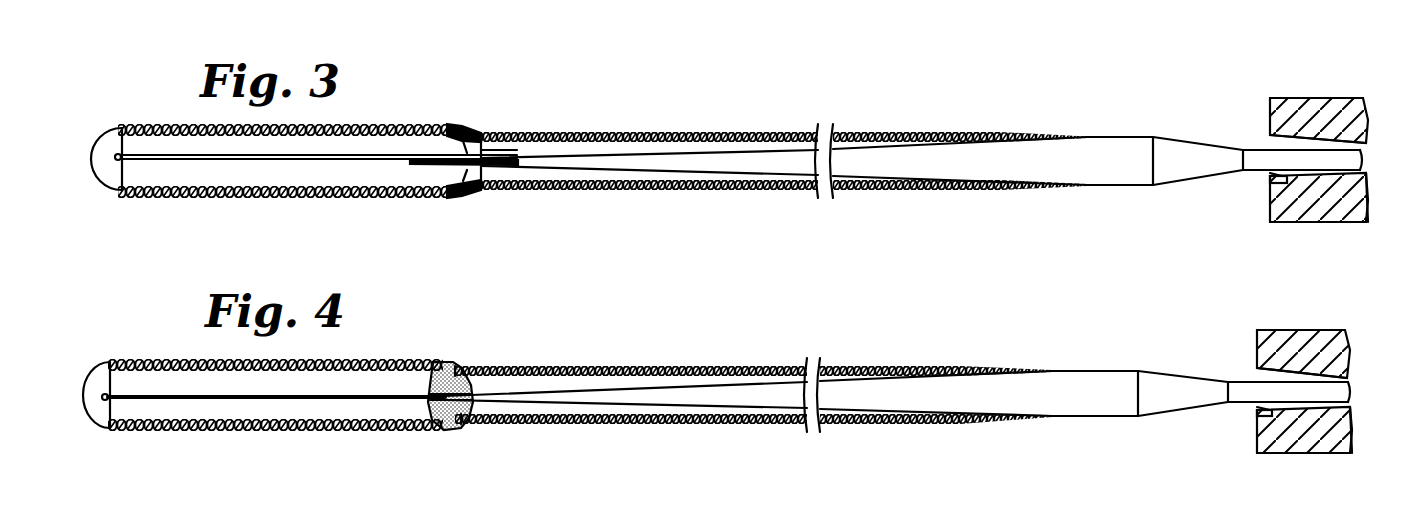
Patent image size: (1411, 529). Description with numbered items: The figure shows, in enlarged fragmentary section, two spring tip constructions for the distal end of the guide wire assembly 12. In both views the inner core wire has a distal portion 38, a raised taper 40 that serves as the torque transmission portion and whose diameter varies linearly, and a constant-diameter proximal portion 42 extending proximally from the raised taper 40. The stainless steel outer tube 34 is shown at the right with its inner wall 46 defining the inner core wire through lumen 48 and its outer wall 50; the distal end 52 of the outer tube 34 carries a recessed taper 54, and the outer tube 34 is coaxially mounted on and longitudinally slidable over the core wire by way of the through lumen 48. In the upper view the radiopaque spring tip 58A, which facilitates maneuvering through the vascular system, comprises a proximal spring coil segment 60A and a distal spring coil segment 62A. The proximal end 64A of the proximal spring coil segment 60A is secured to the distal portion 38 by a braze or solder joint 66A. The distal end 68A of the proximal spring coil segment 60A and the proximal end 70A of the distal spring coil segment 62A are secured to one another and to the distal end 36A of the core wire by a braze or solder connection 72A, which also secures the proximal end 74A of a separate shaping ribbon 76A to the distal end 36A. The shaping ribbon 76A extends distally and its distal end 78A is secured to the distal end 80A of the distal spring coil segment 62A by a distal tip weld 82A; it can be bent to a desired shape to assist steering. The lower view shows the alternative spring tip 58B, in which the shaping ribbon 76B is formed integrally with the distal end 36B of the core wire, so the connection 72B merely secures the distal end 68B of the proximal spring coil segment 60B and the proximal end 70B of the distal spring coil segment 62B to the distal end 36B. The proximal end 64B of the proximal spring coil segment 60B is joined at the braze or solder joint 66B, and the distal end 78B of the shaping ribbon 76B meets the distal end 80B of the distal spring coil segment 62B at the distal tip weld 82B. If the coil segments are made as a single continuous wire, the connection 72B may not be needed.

In FIG. 3, the guide wire assembly 12 is at (1016, 113).
In FIG. 4, the guide wire assembly 12 is at (1106, 440).
In FIG. 3, the outer tube 34 is at (1341, 90).
In FIG. 4, the outer tube 34 is at (1322, 318).
In FIG. 3, the distal end of inner core wire 36A is at (427, 163).
In FIG. 4, the distal end of inner core wire 36B is at (425, 405).
In FIG. 3, the distal portion 38 is at (717, 150).
In FIG. 4, the distal portion 38 is at (697, 397).
In FIG. 3, the raised taper 40 is at (1160, 137).
In FIG. 4, the raised taper 40 is at (1167, 380).
In FIG. 3, the proximal portion 42 is at (1257, 153).
In FIG. 4, the proximal portion 42 is at (1247, 388).
In FIG. 3, the inner wall 46 is at (1358, 223).
In FIG. 4, the inner wall 46 is at (1340, 457).
In FIG. 3, the inner core wire through lumen 48 is at (1311, 145).
In FIG. 4, the inner core wire through lumen 48 is at (1325, 364).
In FIG. 3, the outer wall 50 is at (1340, 223).
In FIG. 3, the distal end of outer tube 52 is at (1273, 210).
In FIG. 4, the distal end of outer tube 52 is at (1263, 455).
In FIG. 3, the recessed taper 54 is at (1270, 173).
In FIG. 4, the recessed taper 54 is at (1263, 407).
In FIG. 3, the radiopaque spring tip 58A is at (338, 124).
In FIG. 4, the alternative spring tip 58B is at (344, 350).
In FIG. 3, the proximal spring coil segment 60A is at (595, 130).
In FIG. 4, the proximal spring coil segment 60B is at (533, 362).
In FIG. 3, the distal spring coil segment 62A is at (150, 197).
In FIG. 4, the distal spring coil segment 62B is at (227, 433).
In FIG. 3, the proximal end of proximal spring coil segment 64A is at (938, 188).
In FIG. 4, the proximal end of proximal spring coil segment 64B is at (970, 423).
In FIG. 3, the braze or solder joint 66A is at (1060, 187).
In FIG. 4, the braze or solder joint 66B is at (1028, 370).
In FIG. 3, the distal end of proximal spring coil segment 68A is at (473, 190).
In FIG. 4, the distal end of proximal spring coil segment 68B is at (470, 428).
In FIG. 3, the proximal end of distal spring coil segment 70A is at (440, 133).
In FIG. 4, the proximal end of distal spring coil segment 70B is at (433, 362).
In FIG. 3, the braze or solder connection 72A is at (450, 173).
In FIG. 4, the connection 72B is at (463, 365).
In FIG. 3, the proximal end of shaping ribbon 74A is at (482, 140).
In FIG. 3, the shaping ribbon 76A is at (245, 160).
In FIG. 4, the shaping ribbon 76B is at (287, 403).
In FIG. 3, the distal end of shaping ribbon 78A is at (96, 158).
In FIG. 4, the distal end of shaping ribbon 78B is at (97, 413).
In FIG. 3, the distal end of distal spring coil segment 80A is at (143, 127).
In FIG. 4, the distal end of distal spring coil segment 80B is at (140, 360).
In FIG. 3, the distal tip weld 82A is at (110, 140).
In FIG. 4, the distal tip weld 82B is at (98, 378).